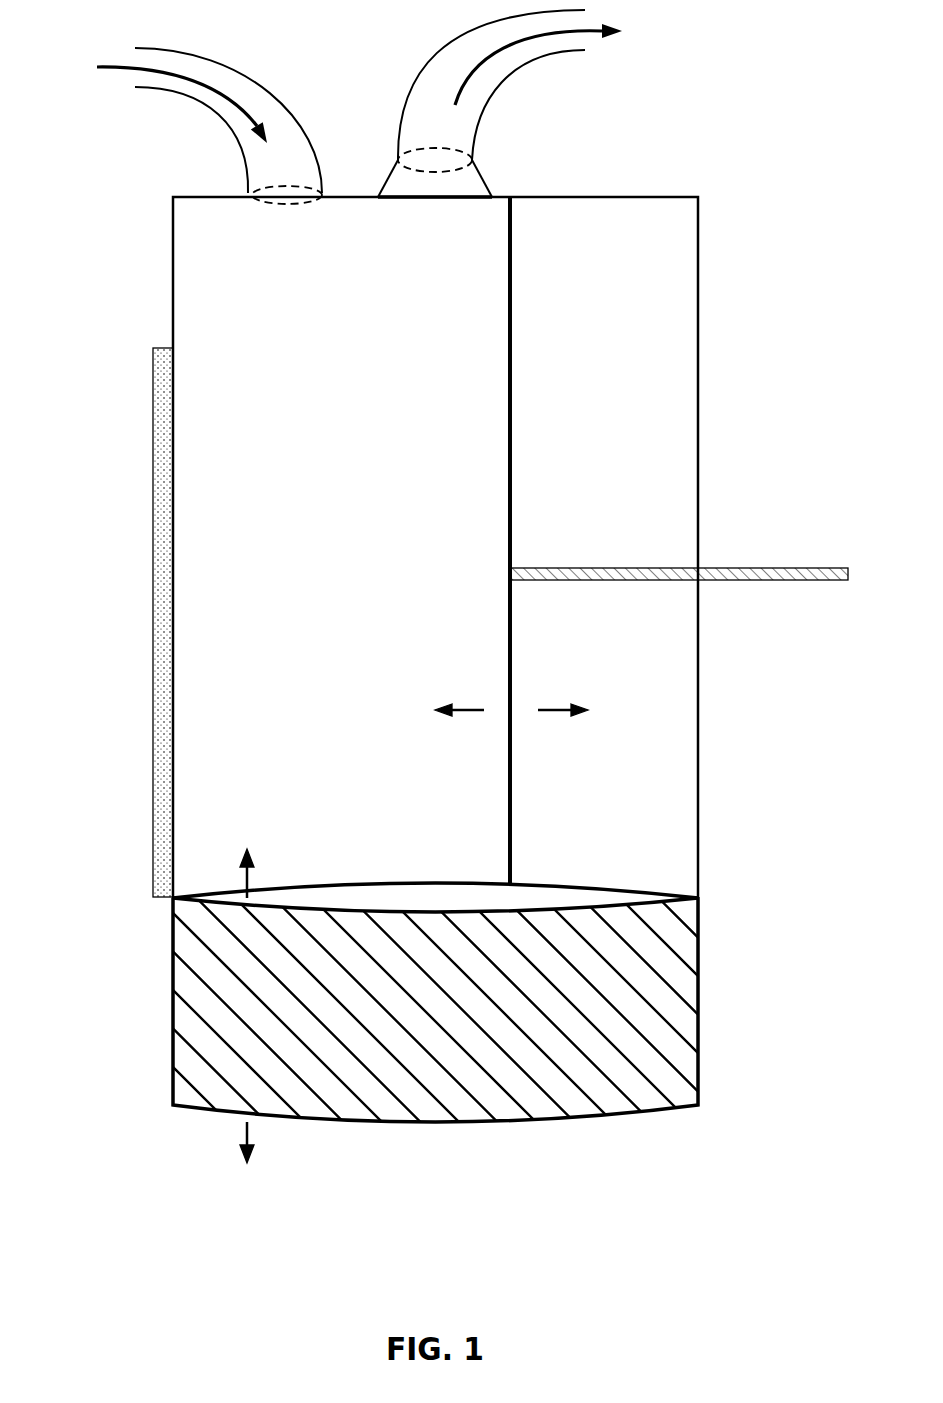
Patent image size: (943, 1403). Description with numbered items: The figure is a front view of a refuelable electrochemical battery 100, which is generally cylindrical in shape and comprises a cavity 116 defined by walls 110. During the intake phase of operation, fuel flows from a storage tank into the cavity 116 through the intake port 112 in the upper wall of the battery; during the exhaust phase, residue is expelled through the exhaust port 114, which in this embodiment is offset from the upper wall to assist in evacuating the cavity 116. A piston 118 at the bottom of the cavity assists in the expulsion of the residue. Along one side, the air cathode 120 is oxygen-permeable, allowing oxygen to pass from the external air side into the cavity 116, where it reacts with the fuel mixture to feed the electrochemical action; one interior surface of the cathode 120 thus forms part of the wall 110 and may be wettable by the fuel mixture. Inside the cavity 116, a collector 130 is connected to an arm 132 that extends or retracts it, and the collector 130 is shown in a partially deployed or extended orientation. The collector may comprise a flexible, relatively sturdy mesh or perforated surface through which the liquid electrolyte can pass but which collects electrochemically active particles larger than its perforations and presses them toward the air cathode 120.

The battery 100 is at (435, 706).
The wall 110 is at (173, 293).
The intake port 112 is at (270, 202).
The exhaust port 114 is at (473, 157).
The cavity 116 is at (435, 547).
The piston 118 is at (218, 973).
The cathode 120 is at (89, 622).
The collector 130 is at (513, 462).
The arm 132 is at (679, 601).